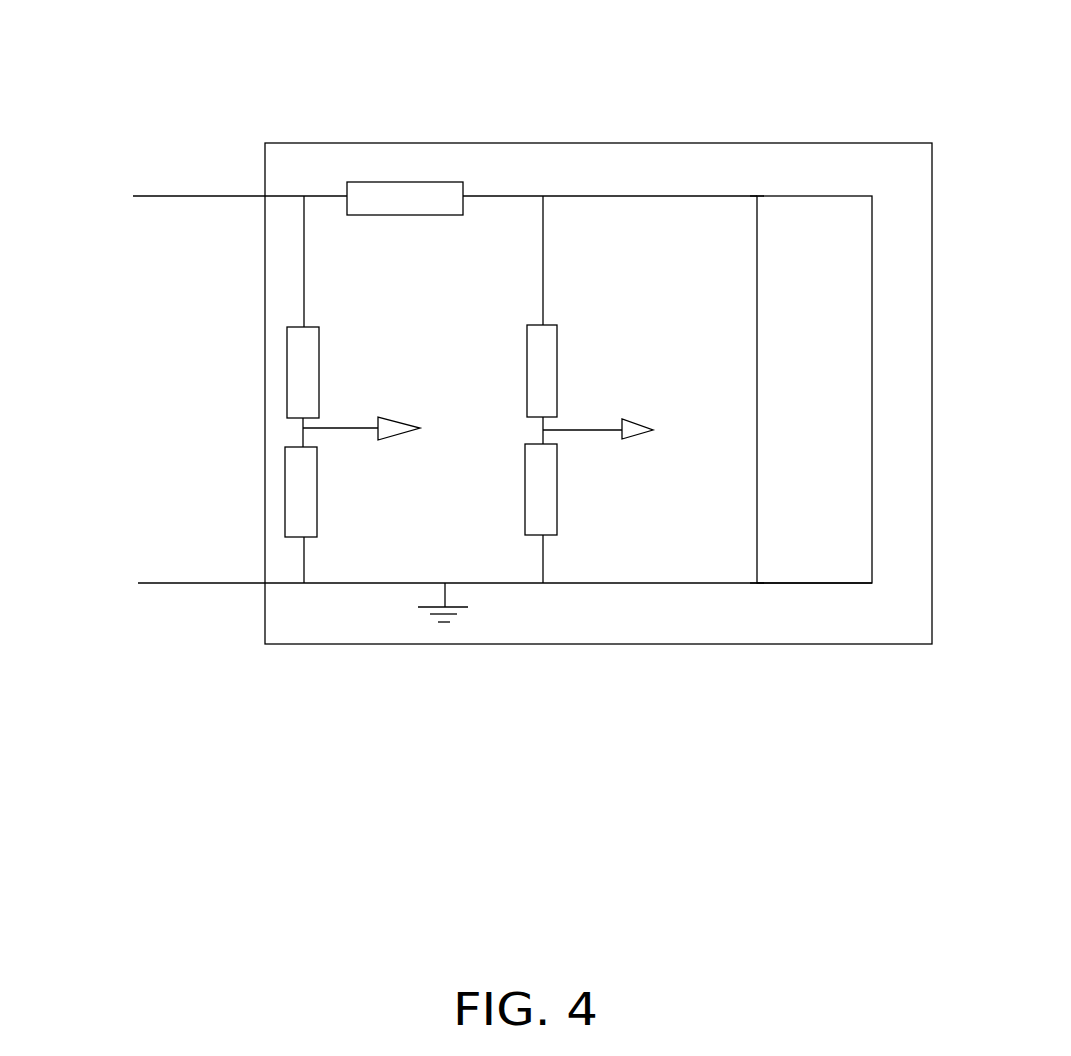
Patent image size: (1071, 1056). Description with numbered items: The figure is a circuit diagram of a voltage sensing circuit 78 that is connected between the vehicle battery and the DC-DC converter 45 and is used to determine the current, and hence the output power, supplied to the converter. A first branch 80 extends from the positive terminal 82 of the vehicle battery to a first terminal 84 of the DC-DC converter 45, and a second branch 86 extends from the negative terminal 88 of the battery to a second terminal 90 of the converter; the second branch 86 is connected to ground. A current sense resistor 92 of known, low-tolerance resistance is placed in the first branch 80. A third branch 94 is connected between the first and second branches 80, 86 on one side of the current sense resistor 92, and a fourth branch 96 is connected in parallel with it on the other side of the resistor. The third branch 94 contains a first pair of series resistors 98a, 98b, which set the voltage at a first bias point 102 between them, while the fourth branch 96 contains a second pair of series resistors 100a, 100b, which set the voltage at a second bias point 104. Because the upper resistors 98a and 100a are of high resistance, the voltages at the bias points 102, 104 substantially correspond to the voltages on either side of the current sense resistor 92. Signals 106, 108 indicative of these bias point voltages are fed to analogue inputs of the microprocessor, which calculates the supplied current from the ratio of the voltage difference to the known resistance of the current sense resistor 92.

The voltage sensing circuit 78 is at (598, 331).
The DC-DC converter 45 is at (833, 303).
The positive terminal 82 is at (160, 206).
The negative terminal 88 is at (161, 591).
The first branch 80 is at (511, 220).
The current sense resistor 92 is at (437, 151).
The first terminal 84 is at (713, 172).
The second branch 86 is at (568, 613).
The second terminal 90 is at (801, 608).
The third branch 94 is at (359, 261).
The fourth branch 96 is at (490, 260).
The first pair of resistors 98a is at (238, 372).
The first pair of resistors 98b is at (234, 515).
The first bias point 102 is at (259, 428).
The second pair of resistors 100a is at (612, 367).
The second pair of resistors 100b is at (611, 513).
The second bias point 104 is at (514, 445).
The signal 106 is at (435, 455).
The signal 108 is at (681, 433).